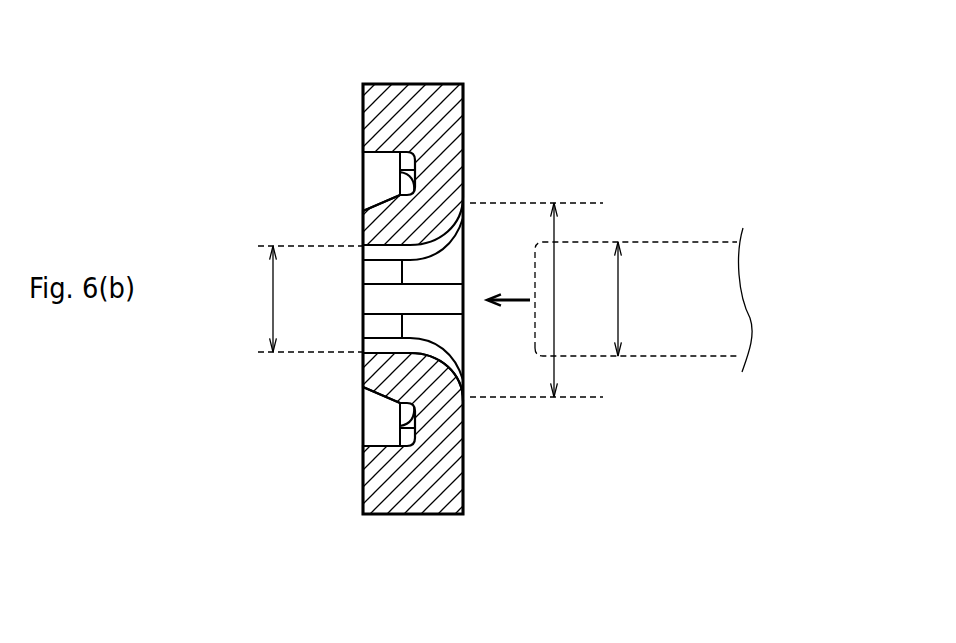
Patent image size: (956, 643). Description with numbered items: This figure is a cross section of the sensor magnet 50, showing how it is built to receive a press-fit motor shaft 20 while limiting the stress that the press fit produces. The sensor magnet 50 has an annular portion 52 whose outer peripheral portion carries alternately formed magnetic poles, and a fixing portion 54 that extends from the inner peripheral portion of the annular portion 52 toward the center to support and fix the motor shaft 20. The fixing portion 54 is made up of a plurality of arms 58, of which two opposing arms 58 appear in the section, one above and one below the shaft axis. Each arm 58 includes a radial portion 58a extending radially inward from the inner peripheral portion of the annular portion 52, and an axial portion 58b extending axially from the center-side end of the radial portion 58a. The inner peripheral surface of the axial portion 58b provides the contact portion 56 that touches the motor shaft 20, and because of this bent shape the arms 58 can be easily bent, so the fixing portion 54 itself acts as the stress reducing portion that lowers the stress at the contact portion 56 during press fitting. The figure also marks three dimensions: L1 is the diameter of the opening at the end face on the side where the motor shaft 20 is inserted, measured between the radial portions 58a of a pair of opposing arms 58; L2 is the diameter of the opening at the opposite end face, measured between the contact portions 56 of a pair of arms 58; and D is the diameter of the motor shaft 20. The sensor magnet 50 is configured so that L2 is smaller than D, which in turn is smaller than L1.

The sensor magnet 50 is at (428, 599).
The annular portion 52 is at (464, 98).
The fixing portion 54 is at (363, 218).
The contact portion 56 is at (385, 245).
The arm 58 is at (464, 170).
The radial portion 58a is at (445, 415).
The axial portion 58b is at (373, 368).
The motor shaft 20 is at (658, 242).
The diameter of the opening on the shaft insertion side L1 is at (555, 300).
The diameter of the opening on the opposite side L2 is at (270, 300).
The diameter of the motor shaft D is at (620, 300).